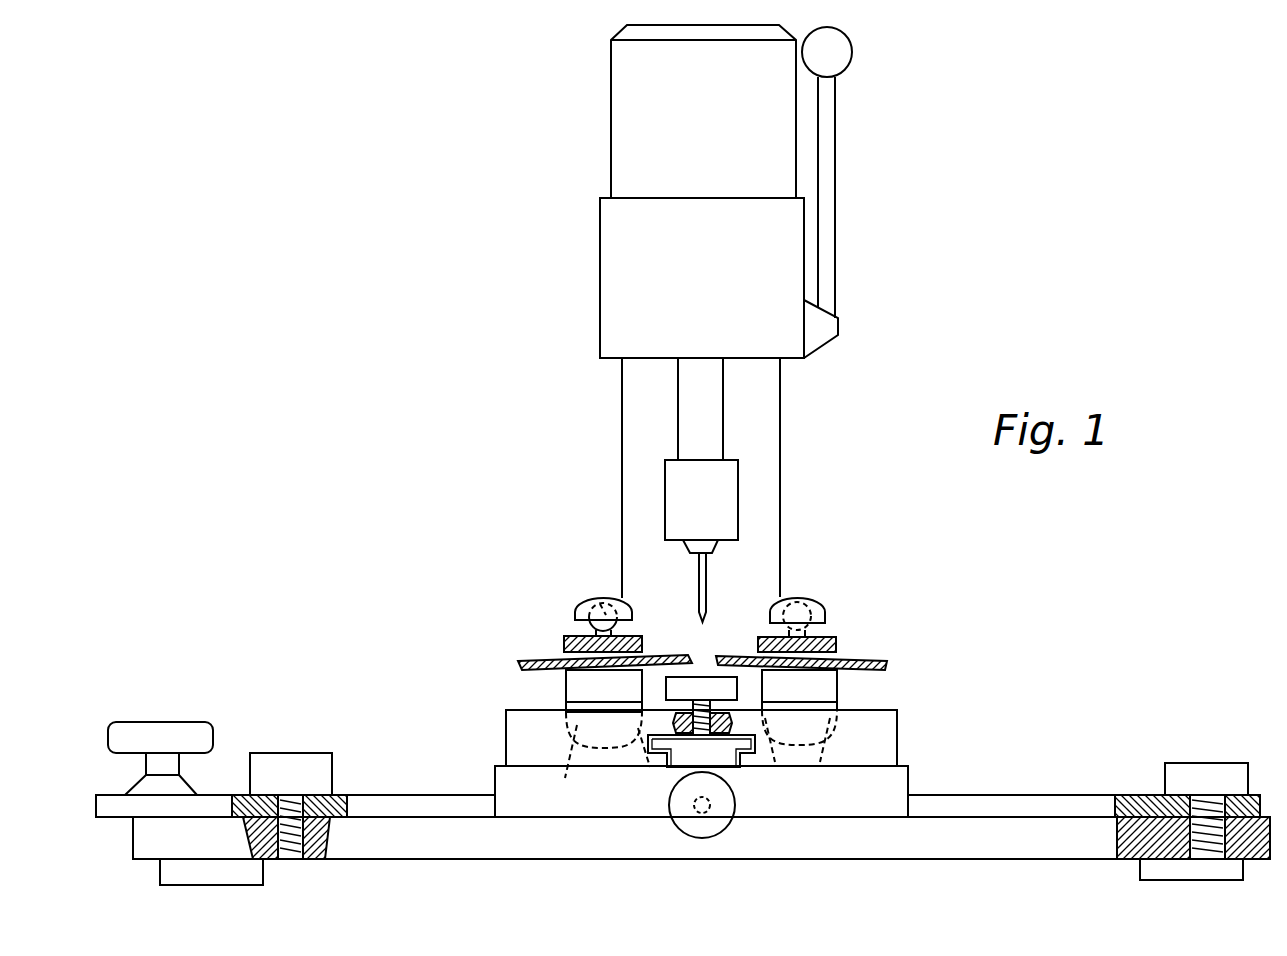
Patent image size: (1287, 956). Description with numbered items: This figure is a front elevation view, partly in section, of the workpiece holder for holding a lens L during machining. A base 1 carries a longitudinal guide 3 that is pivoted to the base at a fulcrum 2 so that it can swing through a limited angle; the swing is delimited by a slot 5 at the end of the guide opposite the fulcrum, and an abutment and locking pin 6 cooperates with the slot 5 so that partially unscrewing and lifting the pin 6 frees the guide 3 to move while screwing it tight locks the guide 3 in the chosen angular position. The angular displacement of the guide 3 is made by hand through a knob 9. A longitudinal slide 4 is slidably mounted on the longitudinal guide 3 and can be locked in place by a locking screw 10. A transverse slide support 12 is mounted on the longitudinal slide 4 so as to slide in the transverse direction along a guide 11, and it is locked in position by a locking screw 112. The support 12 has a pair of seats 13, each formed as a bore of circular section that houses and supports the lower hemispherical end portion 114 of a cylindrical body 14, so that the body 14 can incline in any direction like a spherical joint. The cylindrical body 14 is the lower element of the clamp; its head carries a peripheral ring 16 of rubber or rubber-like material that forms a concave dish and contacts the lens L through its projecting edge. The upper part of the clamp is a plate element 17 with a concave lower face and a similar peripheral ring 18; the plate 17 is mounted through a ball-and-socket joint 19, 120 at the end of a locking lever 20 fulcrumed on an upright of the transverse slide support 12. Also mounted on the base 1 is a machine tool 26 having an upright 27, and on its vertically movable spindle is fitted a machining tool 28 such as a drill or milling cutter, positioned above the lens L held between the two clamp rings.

The base 1 is at (1040, 827).
The fulcrum 2 is at (1203, 768).
The longitudinal guide 3 is at (977, 797).
The longitudinal slide 4 is at (502, 780).
The slot 5 is at (318, 802).
The abutment and locking pin 6 is at (270, 758).
The knob 9 is at (157, 724).
The locking screw 10 is at (728, 803).
The guide 11 is at (682, 753).
The transverse slide support 12 is at (887, 720).
The seat 13 is at (570, 737).
The cylindrical body 14 is at (572, 682).
The peripheral ring 16 is at (823, 668).
The plate element 17 is at (634, 635).
The peripheral ring 18 is at (565, 640).
The ball-and-socket joint 19 is at (597, 607).
The locking lever 20 is at (580, 612).
The machine tool 26 is at (620, 86).
The upright 27 is at (770, 384).
The machining tool 28 is at (702, 572).
The locking screw 112 is at (700, 683).
The lower hemispherical end portion 114 is at (578, 770).
The ball-and-socket joint 120 is at (606, 604).
The lens L is at (660, 668).